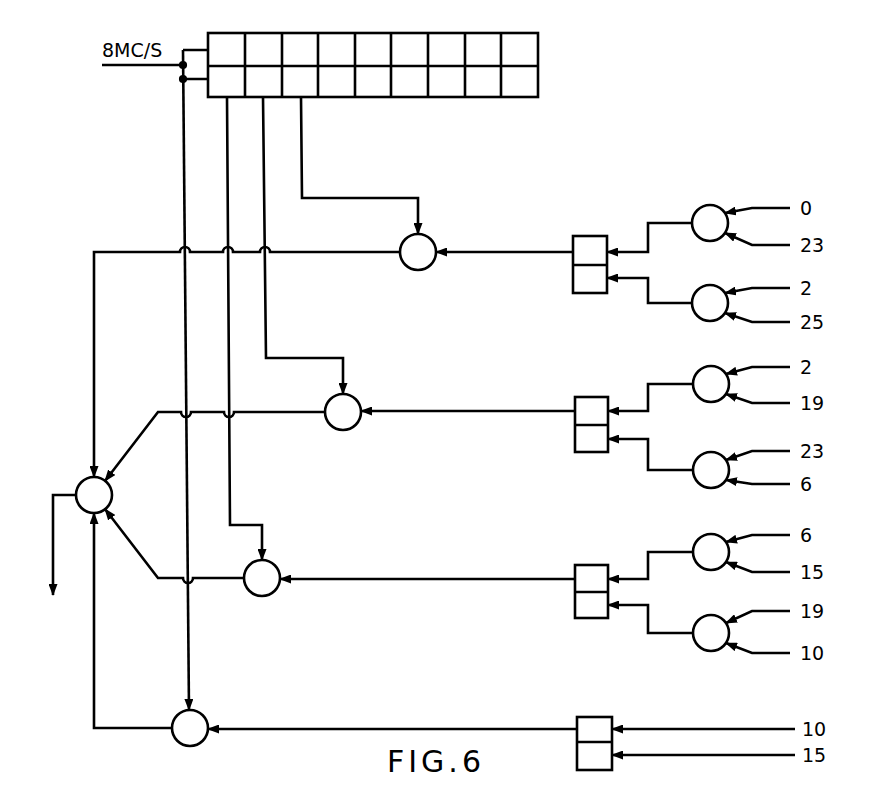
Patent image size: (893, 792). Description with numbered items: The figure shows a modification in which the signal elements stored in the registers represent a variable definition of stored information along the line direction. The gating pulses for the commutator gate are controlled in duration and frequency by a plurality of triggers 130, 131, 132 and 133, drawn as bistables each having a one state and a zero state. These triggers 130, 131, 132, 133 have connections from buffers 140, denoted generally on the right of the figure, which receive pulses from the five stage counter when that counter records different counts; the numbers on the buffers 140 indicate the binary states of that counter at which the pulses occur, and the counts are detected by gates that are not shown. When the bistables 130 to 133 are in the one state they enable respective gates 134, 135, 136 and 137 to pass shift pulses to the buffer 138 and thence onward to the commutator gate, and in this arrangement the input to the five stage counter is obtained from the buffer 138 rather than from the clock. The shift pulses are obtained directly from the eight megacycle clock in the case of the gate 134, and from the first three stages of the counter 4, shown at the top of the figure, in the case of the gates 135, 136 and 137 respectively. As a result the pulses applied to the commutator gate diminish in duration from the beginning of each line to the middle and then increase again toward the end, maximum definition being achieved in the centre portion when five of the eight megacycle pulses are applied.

The counter 4 is at (355, 33).
The trigger 130 is at (577, 722).
The trigger 131 is at (575, 569).
The trigger 132 is at (575, 401).
The trigger 133 is at (573, 282).
The gate 134 is at (206, 712).
The gate 135 is at (277, 563).
The gate 136 is at (358, 398).
The gate 137 is at (437, 240).
The buffer 138 is at (112, 495).
The buffers 140 is at (736, 189).